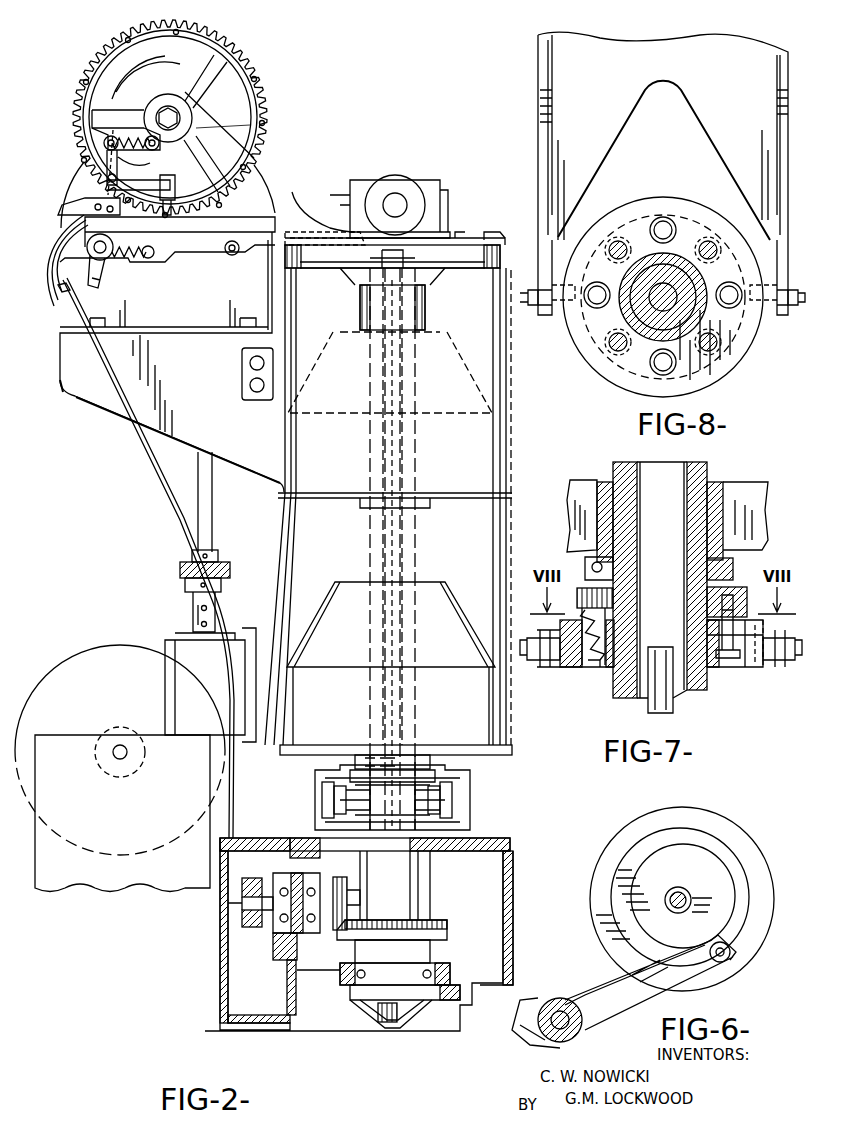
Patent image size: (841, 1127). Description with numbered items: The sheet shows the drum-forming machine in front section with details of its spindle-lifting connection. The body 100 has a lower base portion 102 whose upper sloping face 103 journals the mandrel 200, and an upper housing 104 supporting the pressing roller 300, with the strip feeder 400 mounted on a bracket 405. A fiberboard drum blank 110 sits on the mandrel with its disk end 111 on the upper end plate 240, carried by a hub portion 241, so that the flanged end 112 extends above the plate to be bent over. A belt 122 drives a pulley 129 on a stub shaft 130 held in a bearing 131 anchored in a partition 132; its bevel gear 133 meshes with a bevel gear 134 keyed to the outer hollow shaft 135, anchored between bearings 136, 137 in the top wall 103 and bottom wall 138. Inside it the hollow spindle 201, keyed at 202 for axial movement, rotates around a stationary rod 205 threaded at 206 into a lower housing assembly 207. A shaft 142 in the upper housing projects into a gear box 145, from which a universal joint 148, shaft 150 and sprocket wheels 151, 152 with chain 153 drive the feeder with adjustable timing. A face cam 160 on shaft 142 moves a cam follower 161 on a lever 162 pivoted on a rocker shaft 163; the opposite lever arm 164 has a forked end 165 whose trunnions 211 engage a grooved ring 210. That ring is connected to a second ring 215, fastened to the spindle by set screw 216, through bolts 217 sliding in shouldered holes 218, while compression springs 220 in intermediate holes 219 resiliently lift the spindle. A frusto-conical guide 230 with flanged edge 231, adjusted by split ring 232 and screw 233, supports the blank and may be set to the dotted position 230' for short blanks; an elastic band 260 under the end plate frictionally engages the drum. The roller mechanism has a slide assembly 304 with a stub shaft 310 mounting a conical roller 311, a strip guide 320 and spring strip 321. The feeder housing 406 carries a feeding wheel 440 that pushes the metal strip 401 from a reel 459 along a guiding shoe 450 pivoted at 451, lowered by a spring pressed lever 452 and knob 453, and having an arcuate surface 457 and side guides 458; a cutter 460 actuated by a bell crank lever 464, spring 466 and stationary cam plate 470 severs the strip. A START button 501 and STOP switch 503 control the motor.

In FIG. 2, the body 100 is at (498, 784).
In FIG. 2, the lower base portion 102 is at (518, 863).
In FIG. 2, the upper sloping face 103 is at (497, 841).
In FIG. 2, the upper housing 104 is at (486, 512).
In FIG. 2, the cylindrical drum blank 110 is at (500, 432).
In FIG. 2, the disk end 111 is at (460, 240).
In FIG. 2, the flanged end 112 is at (490, 240).
In FIG. 2, the belt 122 is at (244, 935).
In FIG. 2, the pulley 129 is at (240, 918).
In FIG. 2, the stub shaft 130 is at (284, 932).
In FIG. 2, the bearing 131 is at (280, 876).
In FIG. 2, the partition 132 is at (287, 1000).
In FIG. 2, the bevel gear 133 is at (345, 880).
In FIG. 2, the bevel gear 134 is at (442, 933).
In FIG. 2, the outer hollow shaft 135 is at (426, 886).
In FIG. 2, the bearing 136 is at (430, 851).
In FIG. 2, the bearing 137 is at (436, 966).
In FIG. 2, the bottom wall 138 is at (458, 985).
In FIG. 6, the shaft 142 is at (688, 902).
In FIG. 2, the gear box 145 is at (172, 646).
In FIG. 2, the universal joint 148 is at (192, 612).
In FIG. 2, the shaft 150 is at (212, 515).
In FIG. 2, the sprocket wheel 151 is at (198, 556).
In FIG. 2, the sprocket wheel 152 is at (185, 587).
In FIG. 2, the sprocket chain 153 is at (180, 570).
In FIG. 6, the face cam 160 is at (738, 850).
In FIG. 6, the cam follower 161 is at (732, 968).
In FIG. 6, the lever 162 is at (605, 1025).
In FIG. 6, the stub rocker shaft 163 is at (588, 988).
In FIG. 6, the lever arm 164 is at (530, 1012).
In FIG. 2, the forked end 165 is at (332, 793).
In FIG. 8, the forked end 165 is at (547, 68).
In FIG. 7, the forked end 165 is at (545, 663).
In FIG. 2, the mandrel 200 is at (424, 556).
In FIG. 2, the hollow spindle 201 is at (411, 535).
In FIG. 8, the hollow spindle 201 is at (668, 275).
In FIG. 7, the hollow spindle 201 is at (614, 482).
In FIG. 2, the keyed lower end 202 is at (345, 947).
In FIG. 2, the stationary rod 205 is at (398, 576).
In FIG. 8, the stationary rod 205 is at (672, 290).
In FIG. 7, the stationary rod 205 is at (667, 712).
In FIG. 2, the threads 206 is at (406, 1026).
In FIG. 2, the lower housing assembly 207 is at (380, 1024).
In FIG. 2, the grooved ring 210 is at (340, 795).
In FIG. 8, the grooved ring 210 is at (686, 200).
In FIG. 7, the grooved ring 210 is at (745, 665).
In FIG. 2, the trunnions 211 is at (328, 790).
In FIG. 8, the trunnions 211 is at (565, 302).
In FIG. 7, the trunnions 211 is at (568, 662).
In FIG. 2, the second ring 215 is at (452, 774).
In FIG. 7, the second ring 215 is at (752, 600).
In FIG. 7, the set screw 216 is at (630, 592).
In FIG. 8, the bolts 217 is at (618, 240).
In FIG. 7, the bolts 217 is at (720, 665).
In FIG. 8, the shouldered holes 218 is at (640, 228).
In FIG. 7, the shouldered holes 218 is at (706, 668).
In FIG. 8, the shouldered holes 219 is at (660, 217).
In FIG. 7, the shouldered holes 219 is at (626, 636).
In FIG. 8, the compression springs 220 is at (612, 268).
In FIG. 7, the compression springs 220 is at (633, 612).
In FIG. 2, the frusto-conical lower drum support and guide 230 is at (391, 663).
In FIG. 7, the frusto-conical lower drum support and guide 230 is at (674, 520).
In FIG. 2, the dotted line position of guide 230' is at (390, 372).
In FIG. 2, the lower flanged edge 231 is at (500, 750).
In FIG. 2, the split ring 232 is at (424, 745).
In FIG. 7, the split ring 232 is at (735, 585).
In FIG. 2, the screw 233 is at (372, 745).
In FIG. 7, the screw 233 is at (637, 560).
In FIG. 2, the upper end plate 240 is at (450, 245).
In FIG. 2, the hub portion 241 is at (426, 308).
In FIG. 2, the elastic band 260 is at (341, 270).
In FIG. 2, the pressing roller mechanism 300 is at (423, 178).
In FIG. 2, the slide assembly 304 is at (440, 196).
In FIG. 2, the stub shaft 310 is at (396, 200).
In FIG. 2, the conical roller 311 is at (384, 198).
In FIG. 2, the strip guide member 320 is at (306, 212).
In FIG. 2, the resilient spring strip 321 is at (300, 205).
In FIG. 2, the strip feeder 400 is at (262, 78).
In FIG. 2, the metal strip 401 is at (158, 476).
In FIG. 2, the bracket 405 is at (95, 393).
In FIG. 2, the housing 406 is at (218, 116).
In FIG. 2, the strip feeding wheel 440 is at (236, 50).
In FIG. 2, the guiding shoe 450 is at (207, 262).
In FIG. 2, the pivot 451 is at (232, 255).
In FIG. 2, the spring pressed lever 452 is at (60, 286).
In FIG. 2, the manual knob 453 is at (88, 243).
In FIG. 2, the arcuate guiding surface 457 is at (60, 262).
In FIG. 2, the side guides 458 is at (72, 212).
In FIG. 2, the reel 459 is at (150, 254).
In FIG. 2, the cutter 460 is at (194, 140).
In FIG. 2, the bell crank lever 464 is at (135, 178).
In FIG. 2, the spring 466 is at (100, 128).
In FIG. 2, the stationary cam plate 470 is at (100, 146).
In FIG. 2, the START push button 501 is at (248, 360).
In FIG. 2, the STOP switch 503 is at (254, 388).